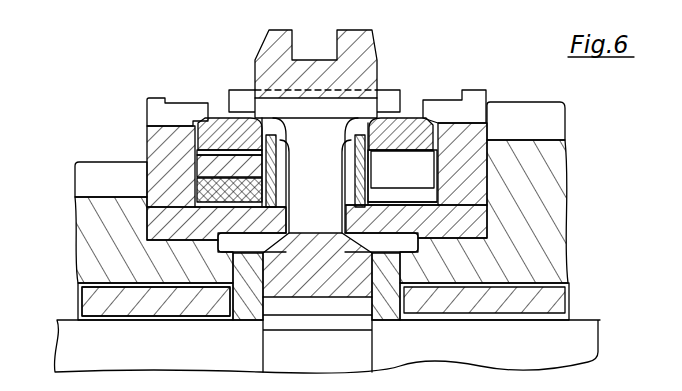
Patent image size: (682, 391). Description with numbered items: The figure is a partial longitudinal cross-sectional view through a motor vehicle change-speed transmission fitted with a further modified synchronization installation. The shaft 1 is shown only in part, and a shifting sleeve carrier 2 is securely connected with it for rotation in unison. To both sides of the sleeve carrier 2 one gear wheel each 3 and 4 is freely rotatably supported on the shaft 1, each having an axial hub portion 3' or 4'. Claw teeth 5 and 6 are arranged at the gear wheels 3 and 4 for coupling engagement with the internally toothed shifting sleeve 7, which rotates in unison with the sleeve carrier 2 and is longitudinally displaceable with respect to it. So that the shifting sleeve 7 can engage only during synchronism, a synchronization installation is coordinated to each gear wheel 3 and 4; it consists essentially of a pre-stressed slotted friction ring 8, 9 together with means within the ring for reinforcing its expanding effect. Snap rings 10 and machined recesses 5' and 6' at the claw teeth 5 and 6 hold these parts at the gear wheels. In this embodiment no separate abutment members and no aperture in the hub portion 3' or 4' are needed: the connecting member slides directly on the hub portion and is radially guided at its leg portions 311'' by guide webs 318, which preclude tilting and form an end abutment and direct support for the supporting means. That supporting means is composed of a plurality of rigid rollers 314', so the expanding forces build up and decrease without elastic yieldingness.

The shaft 1 is at (434, 355).
The shifting sleeve carrier 2 is at (323, 173).
The gear wheel 3 is at (134, 222).
The hub portion 3' is at (159, 240).
The gear wheel 4 is at (497, 192).
The hub portion 4' is at (473, 221).
The claw teeth 5 is at (196, 158).
The machined recess 5' is at (177, 97).
The claw teeth 6 is at (425, 149).
The machined recess 6' is at (454, 95).
The shifting sleeve 7 is at (365, 58).
The friction ring 8 is at (225, 131).
The friction ring 9 is at (407, 120).
The snap ring 10 is at (355, 170).
The guide webs 318 is at (222, 170).
The leg portions 311'' is at (143, 182).
The rollers 314' is at (402, 176).